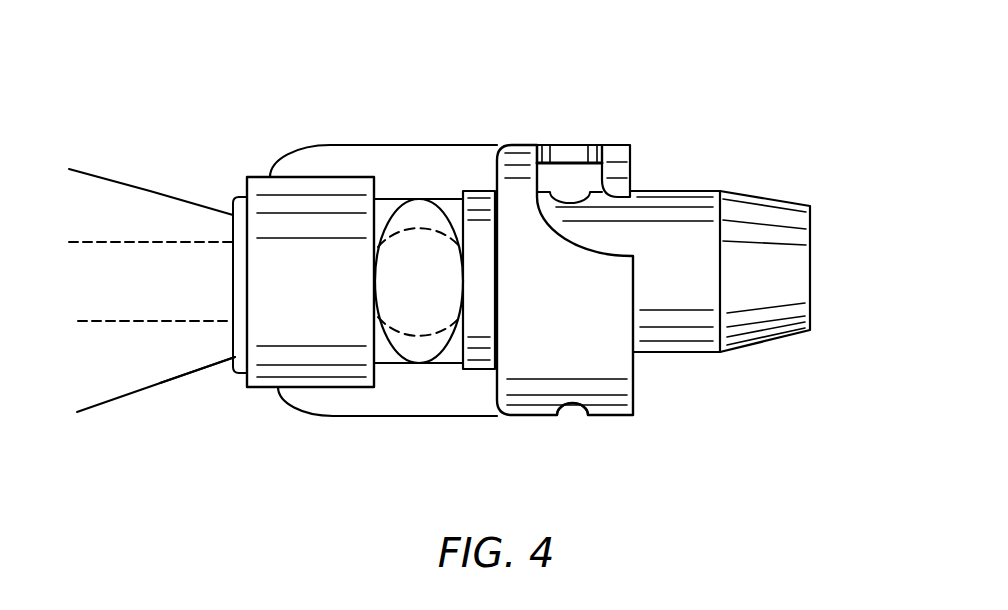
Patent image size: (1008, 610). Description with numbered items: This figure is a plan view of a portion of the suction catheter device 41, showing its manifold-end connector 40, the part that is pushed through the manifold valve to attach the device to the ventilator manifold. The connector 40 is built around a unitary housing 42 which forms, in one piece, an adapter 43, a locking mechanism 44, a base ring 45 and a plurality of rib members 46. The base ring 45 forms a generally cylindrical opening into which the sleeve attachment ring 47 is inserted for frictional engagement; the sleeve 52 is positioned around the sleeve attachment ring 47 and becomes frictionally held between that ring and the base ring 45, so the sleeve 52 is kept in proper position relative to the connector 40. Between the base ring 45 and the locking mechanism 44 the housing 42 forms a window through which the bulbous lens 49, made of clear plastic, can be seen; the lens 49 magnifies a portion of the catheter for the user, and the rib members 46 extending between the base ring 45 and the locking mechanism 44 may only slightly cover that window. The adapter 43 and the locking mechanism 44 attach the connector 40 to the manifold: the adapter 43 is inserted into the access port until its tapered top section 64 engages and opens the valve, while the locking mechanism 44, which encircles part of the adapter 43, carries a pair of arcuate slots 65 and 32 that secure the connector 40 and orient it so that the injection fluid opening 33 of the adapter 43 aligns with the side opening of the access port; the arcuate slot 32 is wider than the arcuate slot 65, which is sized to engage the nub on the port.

The manifold-end connector 40 is at (555, 279).
The suction catheter device 41 is at (138, 188).
The unitary housing 42 is at (485, 158).
The adapter 43 is at (702, 170).
The locking mechanism 44 is at (623, 128).
The base ring 45 is at (313, 192).
The rib members 46 is at (392, 145).
The sleeve attachment ring 47 is at (233, 373).
The bulbous lens 49 is at (424, 330).
The sleeve 52 is at (210, 362).
The arcuate slot 32 is at (563, 150).
The injection fluid opening 33 is at (567, 198).
The tapered top section 64 is at (772, 197).
The arcuate slot 65 is at (571, 405).